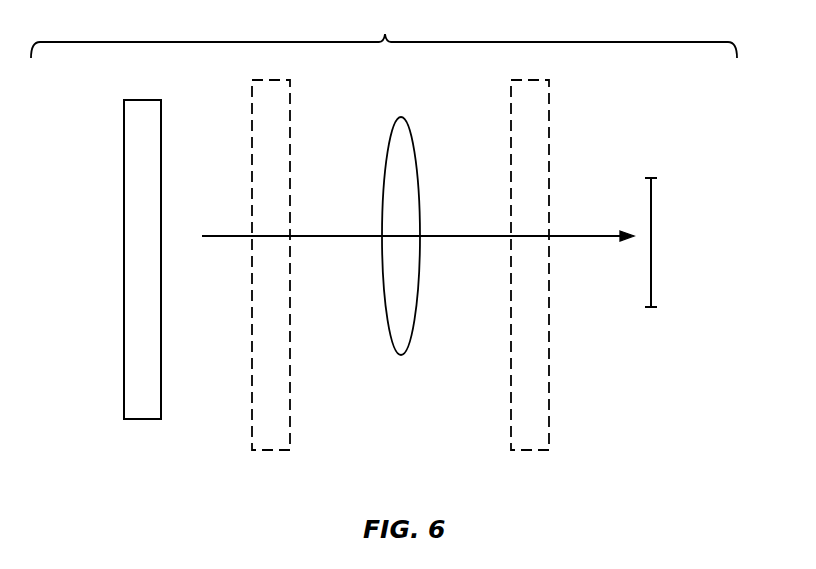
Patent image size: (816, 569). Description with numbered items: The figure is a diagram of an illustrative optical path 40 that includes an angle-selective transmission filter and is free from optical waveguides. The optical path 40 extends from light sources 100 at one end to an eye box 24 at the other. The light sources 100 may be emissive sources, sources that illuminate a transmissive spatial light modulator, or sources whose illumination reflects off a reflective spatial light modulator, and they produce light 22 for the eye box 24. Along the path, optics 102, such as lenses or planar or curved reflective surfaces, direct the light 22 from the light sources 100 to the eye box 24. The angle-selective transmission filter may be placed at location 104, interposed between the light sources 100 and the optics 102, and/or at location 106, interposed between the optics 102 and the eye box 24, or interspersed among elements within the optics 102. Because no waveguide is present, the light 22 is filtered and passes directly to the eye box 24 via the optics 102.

The optical path 40 is at (384, 31).
The light sources 100 is at (124, 234).
The light 22 is at (594, 233).
The location 104 is at (290, 412).
The optics 102 is at (420, 287).
The location 106 is at (549, 412).
The eye box 24 is at (652, 233).